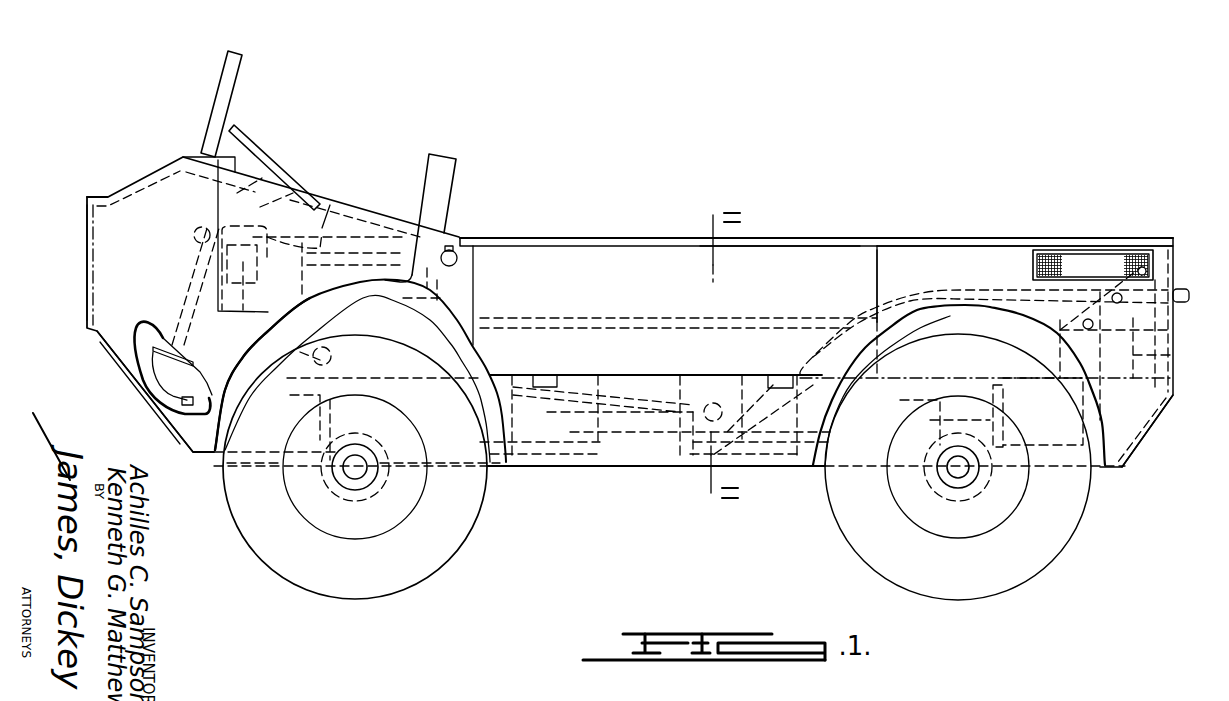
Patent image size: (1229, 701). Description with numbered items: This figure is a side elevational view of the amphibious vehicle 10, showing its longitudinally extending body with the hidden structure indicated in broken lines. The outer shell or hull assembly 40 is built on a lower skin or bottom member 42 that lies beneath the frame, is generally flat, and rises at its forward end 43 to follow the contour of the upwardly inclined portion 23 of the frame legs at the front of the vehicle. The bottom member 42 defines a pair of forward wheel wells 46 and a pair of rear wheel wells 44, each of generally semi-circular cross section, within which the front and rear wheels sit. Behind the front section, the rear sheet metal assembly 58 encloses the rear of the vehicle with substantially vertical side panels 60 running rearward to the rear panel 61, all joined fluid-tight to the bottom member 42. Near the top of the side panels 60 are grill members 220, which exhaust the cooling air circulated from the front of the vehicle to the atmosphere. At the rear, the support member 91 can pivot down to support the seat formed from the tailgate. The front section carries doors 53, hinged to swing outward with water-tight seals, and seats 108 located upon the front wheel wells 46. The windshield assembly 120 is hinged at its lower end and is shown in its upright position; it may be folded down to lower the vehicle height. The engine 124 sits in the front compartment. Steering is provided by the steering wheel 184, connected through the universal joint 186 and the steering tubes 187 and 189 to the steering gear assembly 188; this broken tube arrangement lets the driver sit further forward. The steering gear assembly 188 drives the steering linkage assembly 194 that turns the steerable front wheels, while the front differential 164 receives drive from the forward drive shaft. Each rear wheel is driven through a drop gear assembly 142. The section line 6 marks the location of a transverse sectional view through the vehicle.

The vehicle 10 is at (1123, 168).
The upwardly inclined portion 23 is at (138, 339).
The outer shell or hull assembly 40 is at (917, 238).
The lower skin or bottom member 42 is at (575, 467).
The forward end of bottom member 43 is at (150, 408).
The rear wheel wells 44 is at (939, 312).
The forward wheel wells 46 is at (298, 316).
The doors 53 is at (400, 228).
The rear sheet metal assembly 58 is at (908, 262).
The side panels 60 is at (803, 263).
The rear panel 61 is at (1163, 414).
The support member 91 is at (1173, 356).
The seat 108 is at (458, 156).
The windshield assembly 120 is at (217, 83).
The engine 124 is at (342, 198).
The drop gear assembly 142 is at (1000, 442).
The front differential 164 is at (350, 467).
The steering wheel 184 is at (247, 130).
The universal joint 186 is at (203, 226).
The steering tube 187 is at (265, 178).
The steering gear assembly 188 is at (160, 367).
The steering tube 189 is at (173, 283).
The steering linkage assembly 194 is at (332, 362).
The grill members 220 is at (1097, 263).
The section line 6- 6 is at (678, 493).